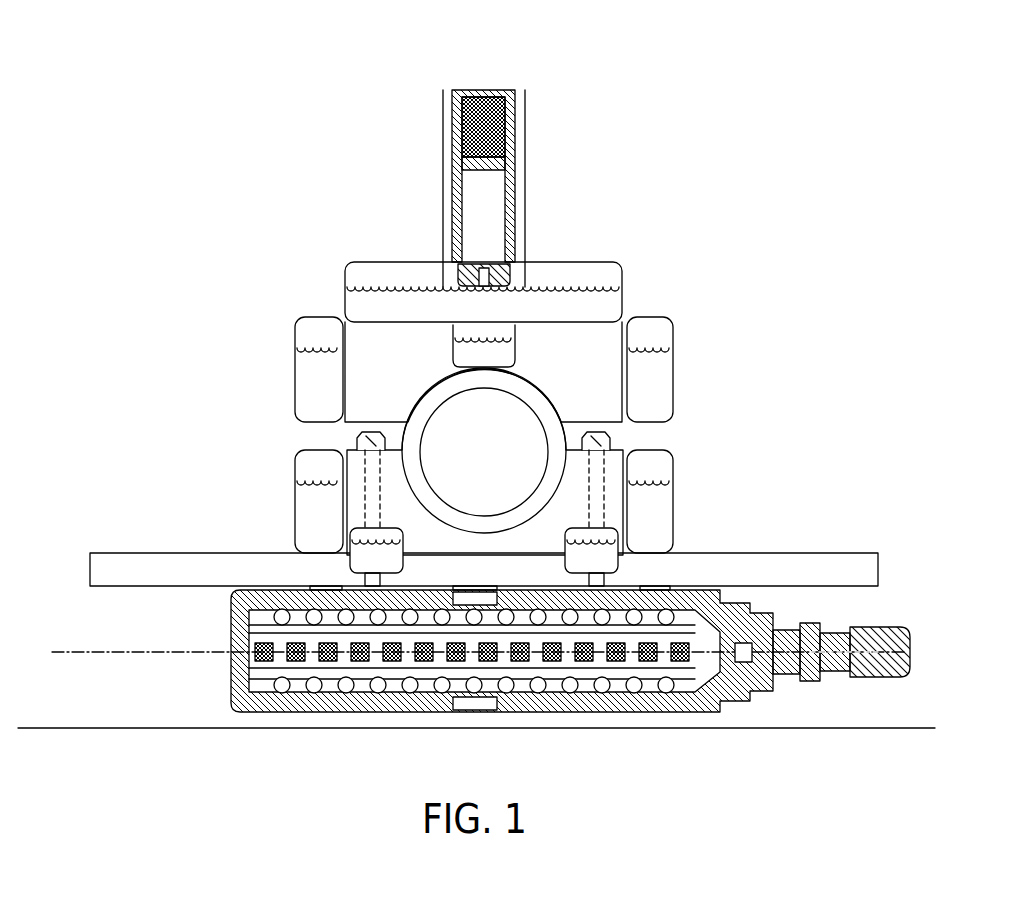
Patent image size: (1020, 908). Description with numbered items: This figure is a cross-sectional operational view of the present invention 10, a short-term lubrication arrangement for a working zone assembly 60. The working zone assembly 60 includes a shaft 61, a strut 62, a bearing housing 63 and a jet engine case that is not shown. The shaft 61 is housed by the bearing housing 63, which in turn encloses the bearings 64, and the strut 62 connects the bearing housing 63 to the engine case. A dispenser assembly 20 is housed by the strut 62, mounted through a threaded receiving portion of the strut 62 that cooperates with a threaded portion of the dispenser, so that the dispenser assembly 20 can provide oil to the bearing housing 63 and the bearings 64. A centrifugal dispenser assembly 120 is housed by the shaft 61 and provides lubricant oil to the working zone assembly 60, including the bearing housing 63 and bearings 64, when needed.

The present invention 10 is at (288, 58).
The dispenser assembly 20 is at (506, 88).
The working zone assembly 60 is at (834, 554).
The shaft 61 is at (183, 553).
The strut 62 is at (443, 190).
The bearing housing 63 is at (338, 421).
The bearings 64 is at (516, 405).
The centrifugal dispenser assembly 120 is at (230, 686).